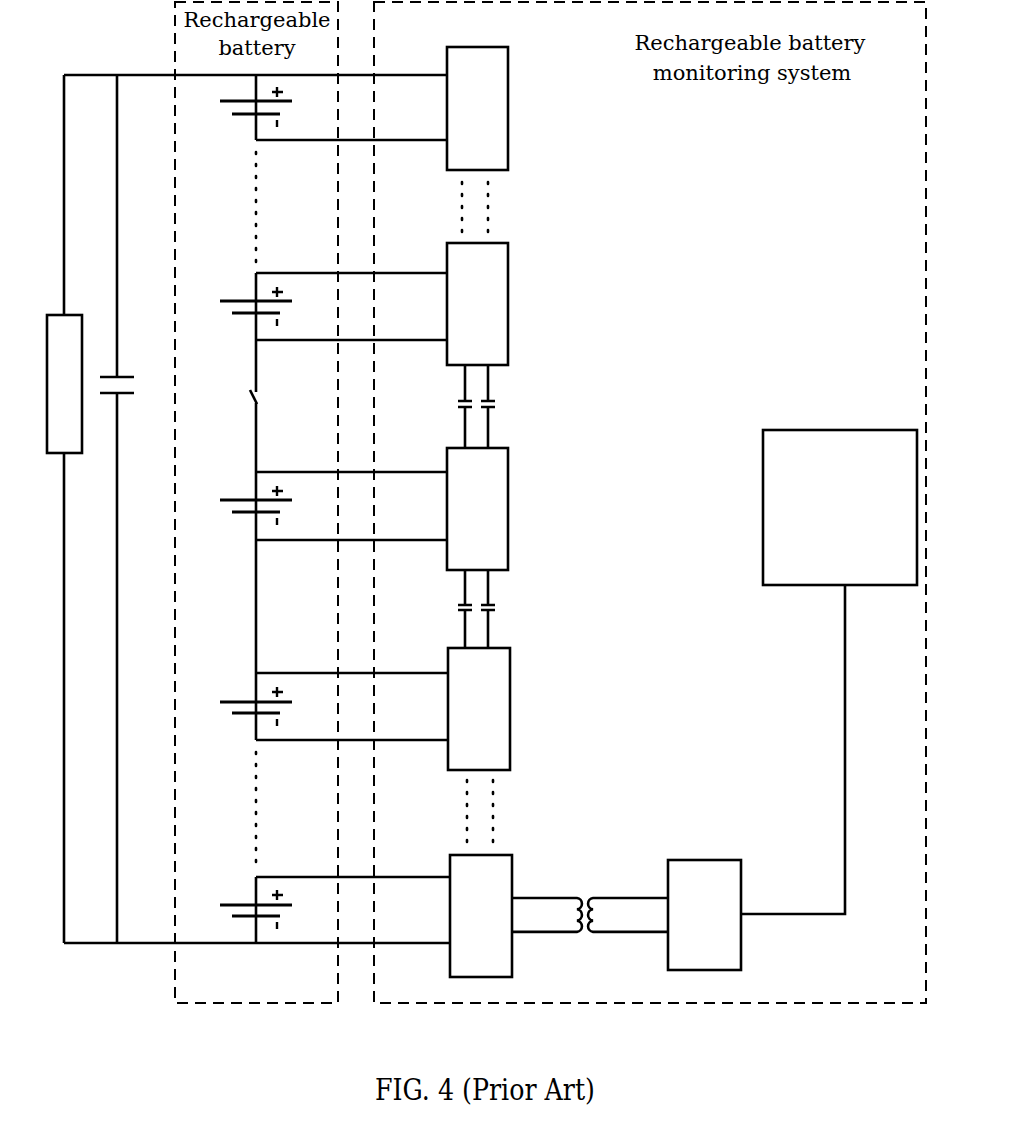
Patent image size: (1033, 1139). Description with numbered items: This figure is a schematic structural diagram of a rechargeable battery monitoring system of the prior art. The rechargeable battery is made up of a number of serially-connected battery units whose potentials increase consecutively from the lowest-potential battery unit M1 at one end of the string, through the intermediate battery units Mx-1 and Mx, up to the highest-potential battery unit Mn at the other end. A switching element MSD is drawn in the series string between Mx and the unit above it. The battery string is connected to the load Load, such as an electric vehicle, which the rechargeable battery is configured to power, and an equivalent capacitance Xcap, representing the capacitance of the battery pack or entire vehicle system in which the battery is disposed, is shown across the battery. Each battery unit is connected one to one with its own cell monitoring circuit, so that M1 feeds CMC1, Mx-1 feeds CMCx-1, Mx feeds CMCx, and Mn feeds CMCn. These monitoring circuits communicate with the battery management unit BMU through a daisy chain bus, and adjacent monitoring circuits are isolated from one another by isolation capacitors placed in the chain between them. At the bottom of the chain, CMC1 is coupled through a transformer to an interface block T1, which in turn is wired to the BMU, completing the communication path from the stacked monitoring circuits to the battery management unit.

The load Load is at (69, 384).
The equivalent capacitance Xcap is at (138, 392).
The highest-potential battery unit Mn is at (238, 110).
The manual service disconnect switch MSD is at (275, 399).
The battery unit Mx is at (238, 508).
The battery module x-1 Mx-1 is at (237, 707).
The lowest-potential battery unit M1 is at (239, 909).
The CMC CMCn is at (477, 108).
The CMC CMCx is at (477, 509).
The CMC CMCx-1 is at (479, 709).
The CMC CMC1 is at (481, 916).
The transceiver T1 is at (704, 915).
The element BMU is at (840, 507).